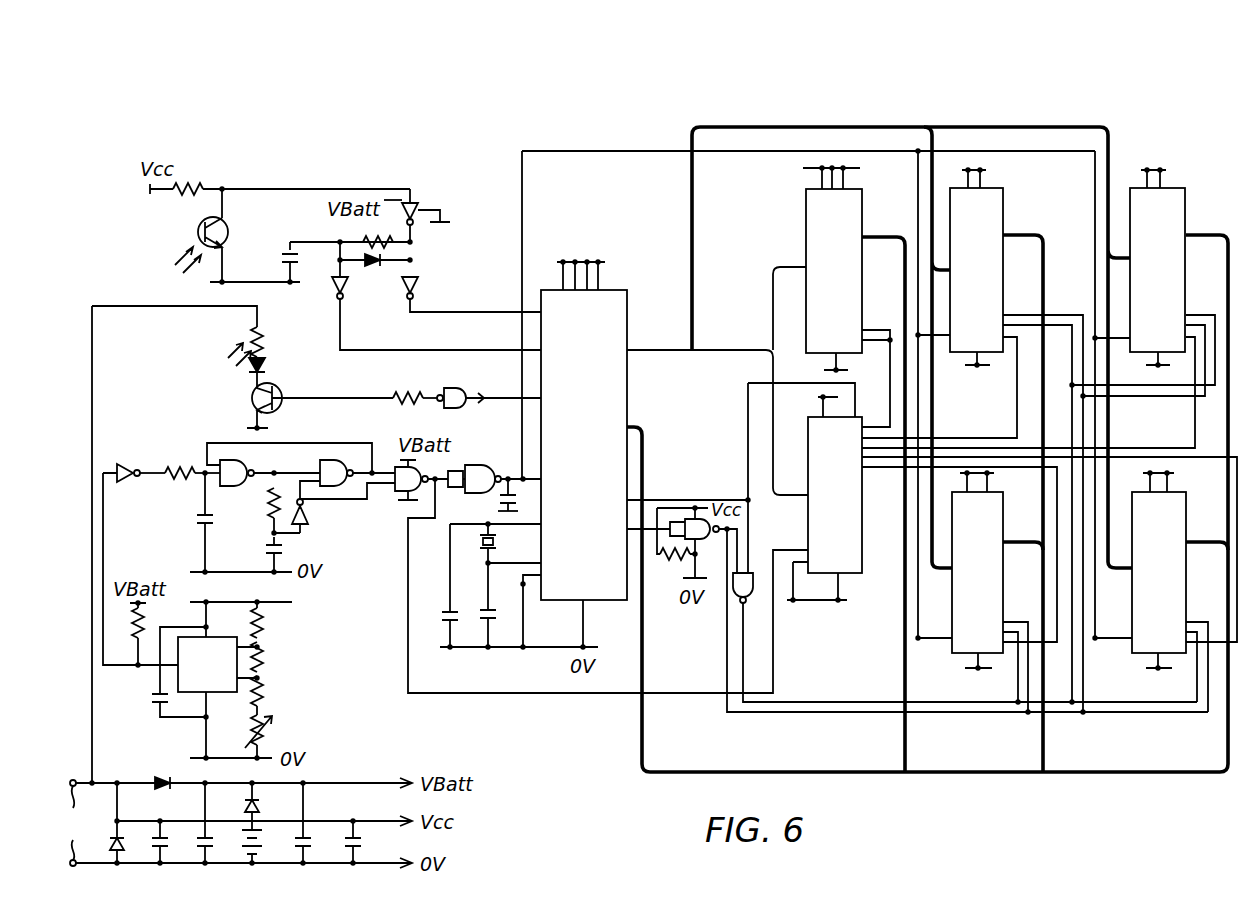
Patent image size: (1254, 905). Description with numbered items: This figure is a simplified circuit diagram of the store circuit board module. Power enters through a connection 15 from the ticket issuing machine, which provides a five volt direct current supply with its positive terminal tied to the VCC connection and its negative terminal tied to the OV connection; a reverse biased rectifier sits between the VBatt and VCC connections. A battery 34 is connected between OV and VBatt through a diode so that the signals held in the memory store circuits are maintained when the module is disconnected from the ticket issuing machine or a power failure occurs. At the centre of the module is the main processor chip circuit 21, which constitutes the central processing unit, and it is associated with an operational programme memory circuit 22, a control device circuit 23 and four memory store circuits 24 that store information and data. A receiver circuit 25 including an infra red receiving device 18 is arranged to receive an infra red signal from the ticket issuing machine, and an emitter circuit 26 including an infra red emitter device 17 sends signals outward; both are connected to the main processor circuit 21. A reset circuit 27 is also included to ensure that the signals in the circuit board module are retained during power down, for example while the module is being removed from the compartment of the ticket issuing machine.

The connection 15 is at (76, 823).
The infra red emitter device 17 is at (265, 365).
The infra red receiving device 18 is at (196, 228).
The main processor chip circuit 21 is at (613, 386).
The operational programme memory circuit 22 is at (850, 219).
The control device circuit 23 is at (853, 540).
The memory store circuit 24 is at (1000, 288).
The receiver circuit 25 is at (212, 186).
The emitter circuit 26 is at (206, 405).
The reset circuit 27 is at (286, 621).
The battery 34 is at (290, 816).